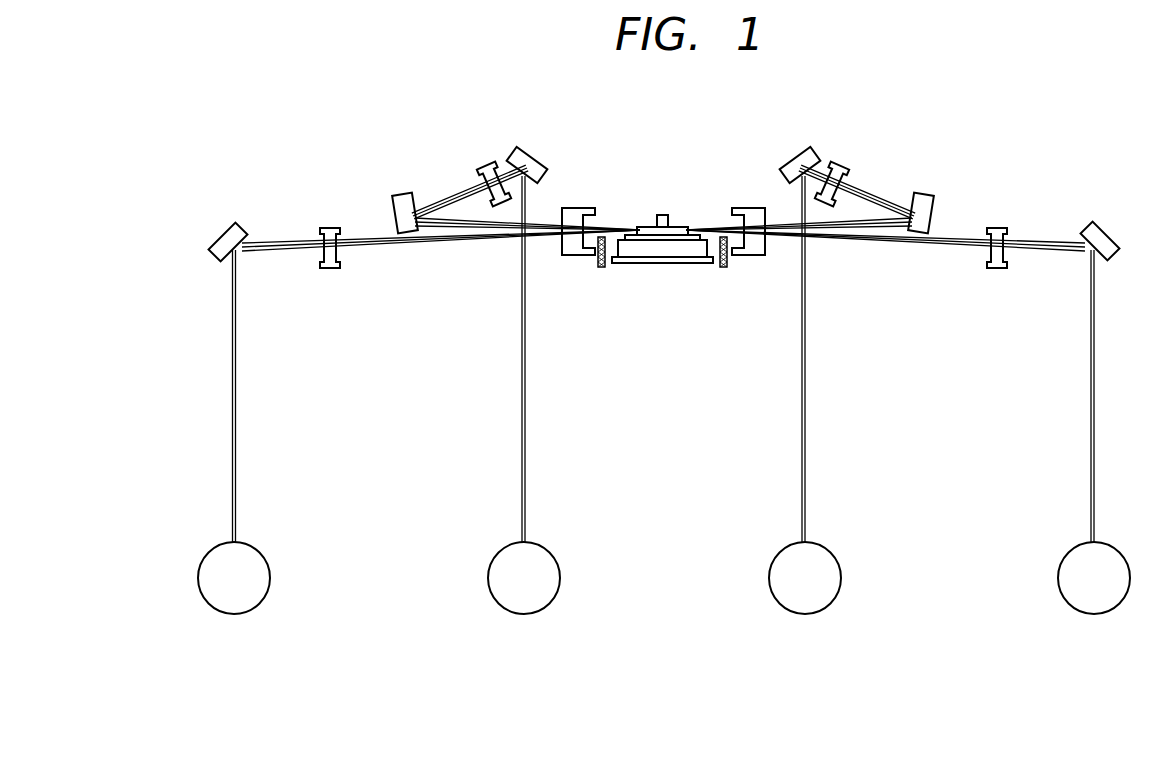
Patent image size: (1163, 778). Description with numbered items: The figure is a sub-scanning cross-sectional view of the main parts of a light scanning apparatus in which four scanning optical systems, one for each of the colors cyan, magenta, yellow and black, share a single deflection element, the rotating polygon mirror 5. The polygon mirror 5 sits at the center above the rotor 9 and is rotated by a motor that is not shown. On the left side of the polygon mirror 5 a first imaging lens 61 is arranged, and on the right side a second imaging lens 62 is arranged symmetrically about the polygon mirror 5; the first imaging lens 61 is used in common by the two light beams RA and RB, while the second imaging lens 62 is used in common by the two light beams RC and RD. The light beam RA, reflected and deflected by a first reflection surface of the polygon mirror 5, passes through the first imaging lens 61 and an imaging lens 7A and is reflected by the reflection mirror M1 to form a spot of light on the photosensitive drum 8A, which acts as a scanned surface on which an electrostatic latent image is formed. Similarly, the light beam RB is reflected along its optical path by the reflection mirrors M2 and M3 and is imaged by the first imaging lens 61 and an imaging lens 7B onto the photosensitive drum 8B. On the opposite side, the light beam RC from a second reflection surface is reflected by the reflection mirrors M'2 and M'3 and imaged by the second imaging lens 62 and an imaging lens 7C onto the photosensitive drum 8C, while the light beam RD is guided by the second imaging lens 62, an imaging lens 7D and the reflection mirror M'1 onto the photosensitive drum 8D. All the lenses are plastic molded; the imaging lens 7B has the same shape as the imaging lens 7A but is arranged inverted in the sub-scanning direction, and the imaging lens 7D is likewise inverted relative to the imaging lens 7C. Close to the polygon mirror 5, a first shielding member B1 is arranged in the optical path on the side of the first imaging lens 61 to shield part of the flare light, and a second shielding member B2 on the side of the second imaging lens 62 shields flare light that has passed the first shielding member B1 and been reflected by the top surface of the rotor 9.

The reflection mirror M1 is at (231, 229).
The reflection mirror M2 is at (402, 197).
The reflection mirror M3 is at (532, 148).
The reflection mirror M'1 is at (1117, 217).
The reflection mirror M'2 is at (940, 186).
The reflection mirror M'3 is at (792, 136).
The imaging lens 7A is at (330, 268).
The imaging lens 7B is at (487, 165).
The imaging lens 7C is at (840, 162).
The imaging lens 7D is at (997, 268).
The light beam RA is at (462, 244).
The light beam RB is at (548, 224).
The light beam RC is at (778, 223).
The light beam RD is at (852, 240).
The rotating polygon mirror 5 is at (646, 226).
The rotor 9 is at (662, 250).
The first imaging lens 61 is at (574, 248).
The second imaging lens 62 is at (752, 248).
The first shielding member B1 is at (602, 268).
The second shielding member B2 is at (722, 268).
The photosensitive drum 8A is at (252, 547).
The photosensitive drum 8B is at (542, 547).
The photosensitive drum 8C is at (822, 547).
The photosensitive drum 8D is at (1112, 547).